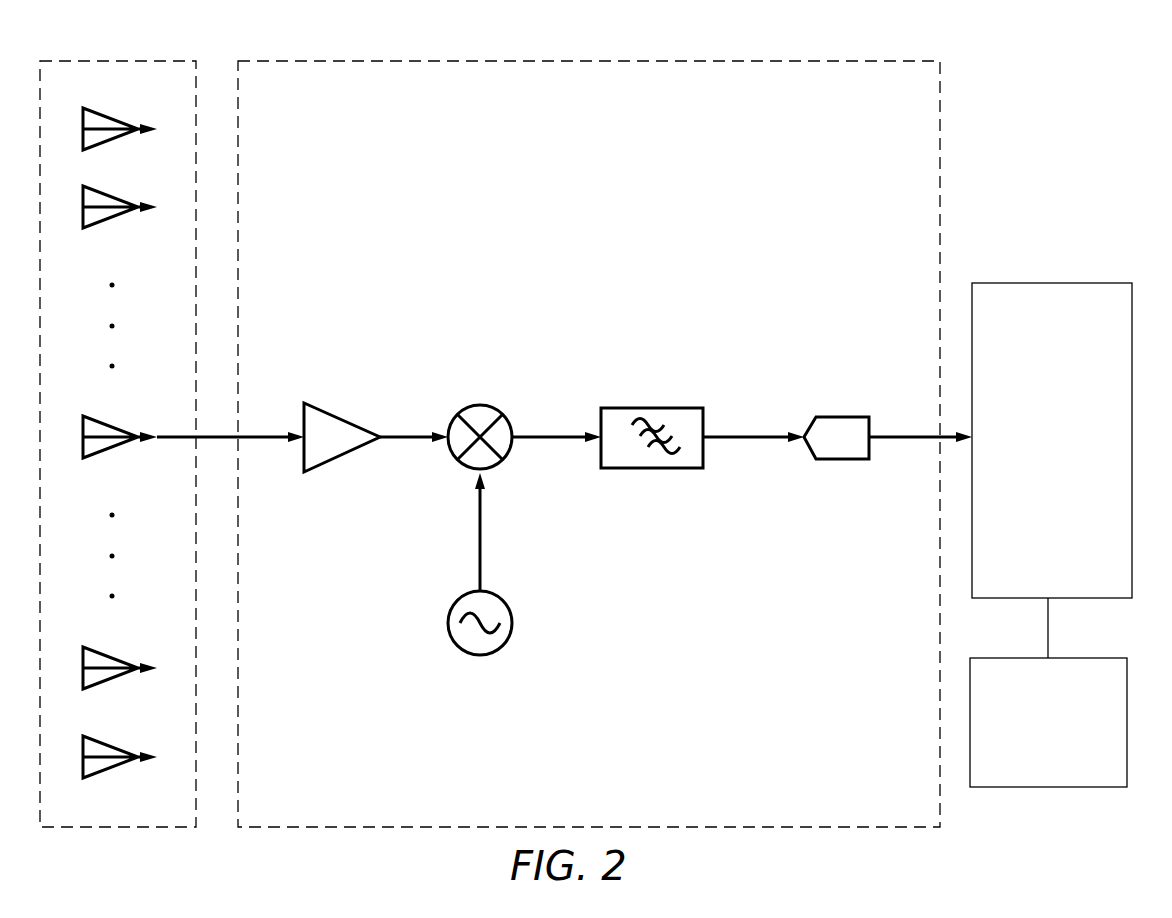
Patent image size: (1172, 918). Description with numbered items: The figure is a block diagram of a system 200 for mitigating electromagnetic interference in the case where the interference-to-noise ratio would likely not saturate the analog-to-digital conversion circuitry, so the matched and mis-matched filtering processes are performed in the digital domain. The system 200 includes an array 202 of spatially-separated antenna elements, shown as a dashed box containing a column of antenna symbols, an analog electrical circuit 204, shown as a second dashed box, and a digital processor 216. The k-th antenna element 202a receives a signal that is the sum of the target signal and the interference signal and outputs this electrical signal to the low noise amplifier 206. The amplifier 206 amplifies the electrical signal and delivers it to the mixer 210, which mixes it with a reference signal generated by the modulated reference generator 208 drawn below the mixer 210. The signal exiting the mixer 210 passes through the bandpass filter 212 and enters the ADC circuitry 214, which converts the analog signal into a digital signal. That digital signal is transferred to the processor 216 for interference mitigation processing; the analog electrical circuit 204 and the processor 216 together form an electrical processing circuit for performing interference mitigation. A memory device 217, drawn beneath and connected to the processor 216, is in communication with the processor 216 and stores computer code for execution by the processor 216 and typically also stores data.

The system 200 is at (995, 88).
The array 202 is at (150, 61).
The antenna element 202a is at (103, 417).
The analog electrical circuit 204 is at (660, 61).
The low noise amplifier 206 is at (318, 410).
The modulated reference generator 208 is at (505, 603).
The mixer 210 is at (488, 410).
The bandpass filter 212 is at (617, 408).
The ADC circuitry 214 is at (833, 422).
The digital processor 216 is at (1052, 440).
The memory device 217 is at (1048, 722).